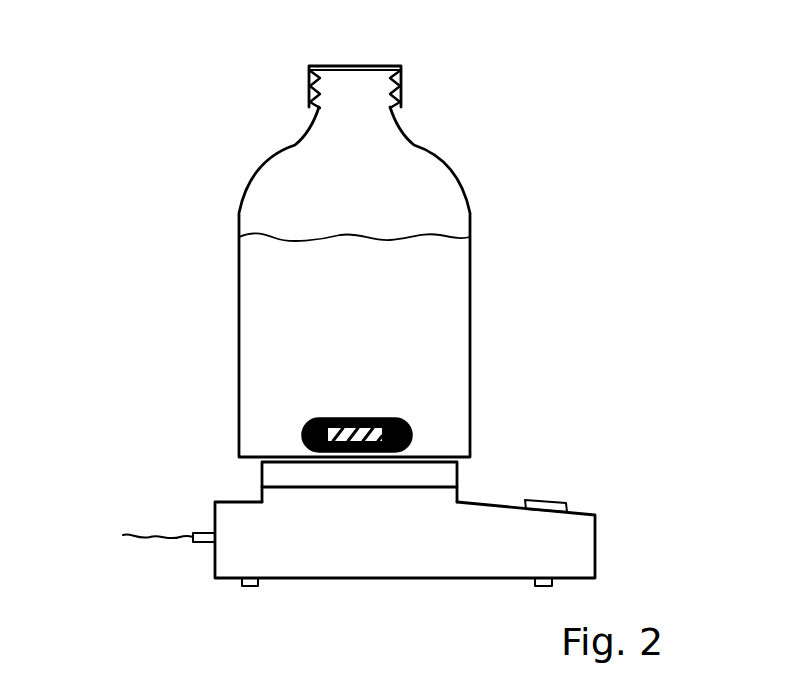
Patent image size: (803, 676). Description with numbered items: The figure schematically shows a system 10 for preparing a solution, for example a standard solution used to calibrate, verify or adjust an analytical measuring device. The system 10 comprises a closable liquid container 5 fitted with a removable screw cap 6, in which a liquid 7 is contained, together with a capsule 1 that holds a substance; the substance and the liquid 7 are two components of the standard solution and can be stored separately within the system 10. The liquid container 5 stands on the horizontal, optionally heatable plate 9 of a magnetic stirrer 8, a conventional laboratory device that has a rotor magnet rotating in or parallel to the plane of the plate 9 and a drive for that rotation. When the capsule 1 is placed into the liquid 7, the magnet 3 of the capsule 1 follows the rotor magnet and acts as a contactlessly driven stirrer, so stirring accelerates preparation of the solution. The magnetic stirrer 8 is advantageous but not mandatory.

The system 10 is at (147, 90).
The capsule 1 is at (360, 435).
The magnet 3 is at (300, 428).
The liquid container 5 is at (463, 187).
The screw cap 6 is at (309, 82).
The liquid 7 is at (450, 321).
The magnetic stirrer 8 is at (583, 549).
The plate 9 is at (355, 477).